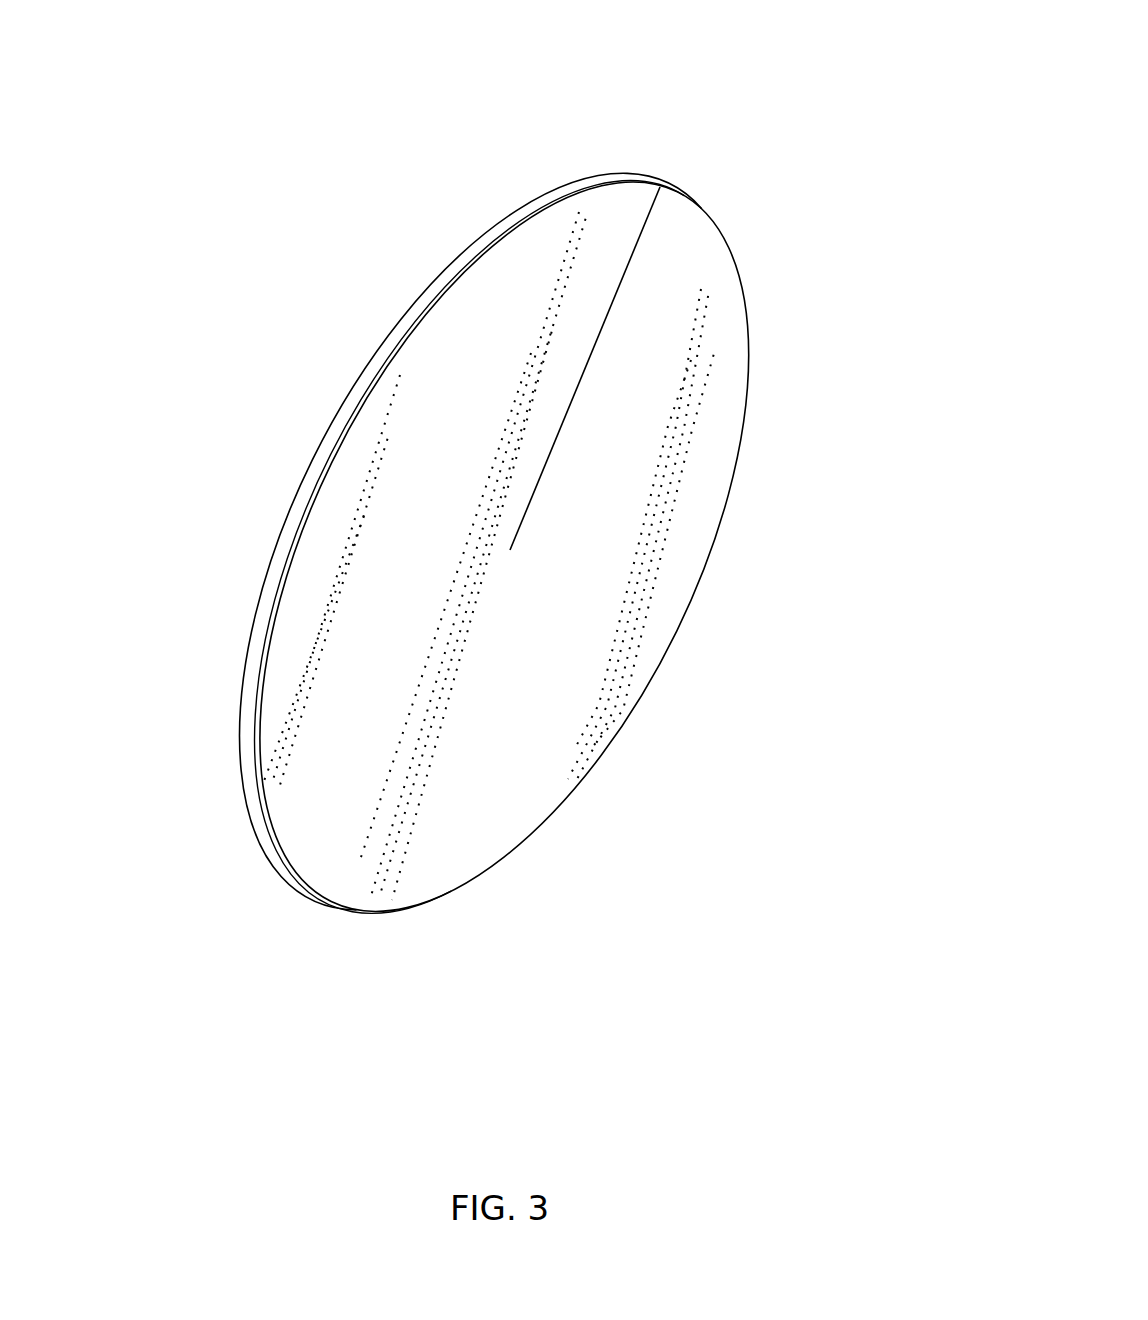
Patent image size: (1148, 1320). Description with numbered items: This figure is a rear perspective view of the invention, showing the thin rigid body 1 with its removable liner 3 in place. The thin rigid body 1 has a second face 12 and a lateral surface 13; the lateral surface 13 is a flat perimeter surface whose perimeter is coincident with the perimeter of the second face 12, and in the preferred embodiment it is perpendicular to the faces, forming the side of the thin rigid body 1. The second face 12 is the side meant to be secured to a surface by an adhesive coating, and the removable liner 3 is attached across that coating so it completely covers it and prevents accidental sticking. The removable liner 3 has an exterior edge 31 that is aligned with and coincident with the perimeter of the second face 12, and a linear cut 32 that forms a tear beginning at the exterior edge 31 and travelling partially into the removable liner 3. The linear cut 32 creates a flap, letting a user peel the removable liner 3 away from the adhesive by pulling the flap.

The thin rigid body 1 is at (604, 80).
The removable liner 3 is at (447, 342).
The second face 12 is at (742, 643).
The lateral surface 13 is at (292, 528).
The exterior edge 31 is at (523, 843).
The linear cut 32 is at (635, 250).